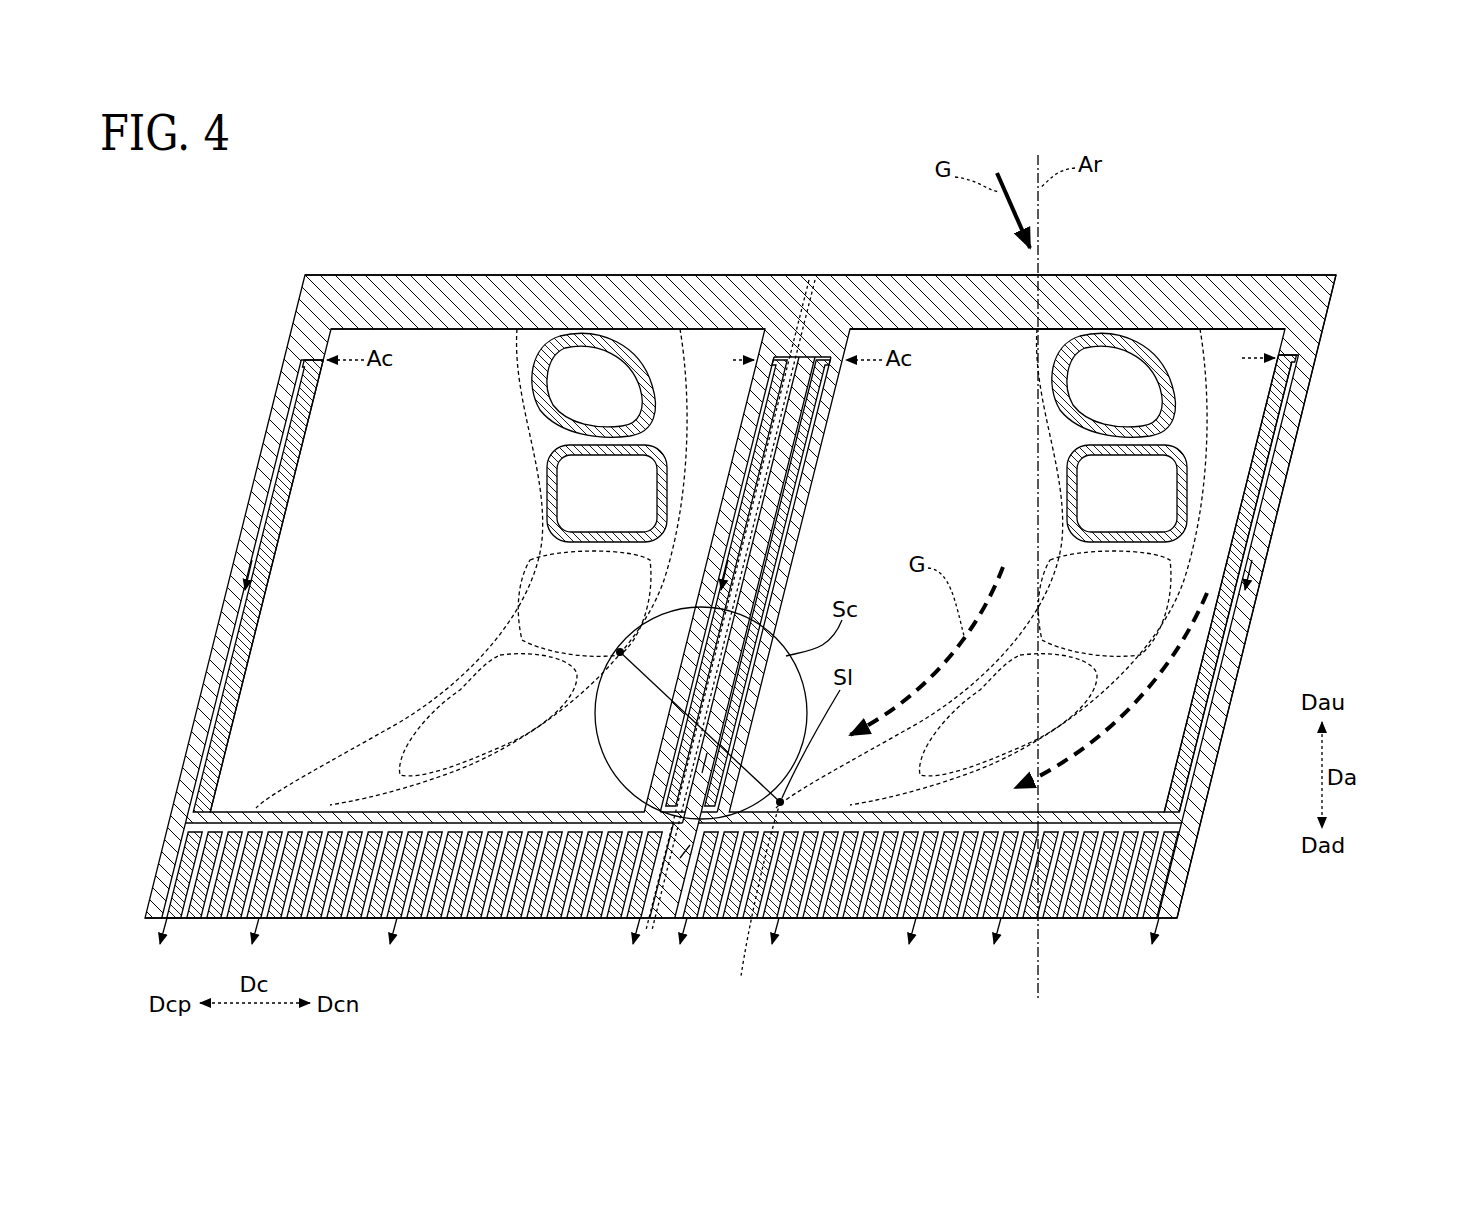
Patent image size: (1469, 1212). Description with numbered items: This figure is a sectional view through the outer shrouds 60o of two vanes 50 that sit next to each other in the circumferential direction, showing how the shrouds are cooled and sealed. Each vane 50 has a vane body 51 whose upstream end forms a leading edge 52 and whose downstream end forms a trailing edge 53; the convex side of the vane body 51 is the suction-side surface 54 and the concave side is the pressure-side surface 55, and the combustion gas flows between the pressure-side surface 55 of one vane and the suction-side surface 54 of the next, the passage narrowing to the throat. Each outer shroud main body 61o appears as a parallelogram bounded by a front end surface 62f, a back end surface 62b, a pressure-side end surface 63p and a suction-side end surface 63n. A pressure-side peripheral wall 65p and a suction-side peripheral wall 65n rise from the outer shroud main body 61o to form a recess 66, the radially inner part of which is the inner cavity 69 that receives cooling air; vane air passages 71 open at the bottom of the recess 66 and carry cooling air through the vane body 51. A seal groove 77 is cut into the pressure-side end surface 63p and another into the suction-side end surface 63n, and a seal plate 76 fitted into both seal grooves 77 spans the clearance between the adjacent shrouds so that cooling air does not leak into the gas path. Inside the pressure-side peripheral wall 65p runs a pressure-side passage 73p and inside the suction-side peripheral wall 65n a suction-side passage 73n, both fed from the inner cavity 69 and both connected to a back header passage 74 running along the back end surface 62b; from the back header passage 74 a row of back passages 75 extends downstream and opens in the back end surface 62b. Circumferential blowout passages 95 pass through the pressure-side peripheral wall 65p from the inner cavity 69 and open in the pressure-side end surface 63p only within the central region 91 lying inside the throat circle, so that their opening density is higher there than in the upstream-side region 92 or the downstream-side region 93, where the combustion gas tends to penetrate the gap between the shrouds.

The vane 50 is at (378, 263).
The vane body 51 is at (513, 530).
The leading edge 52 is at (1072, 330).
The trailing edge 53 is at (754, 902).
The suction-side surface 54 is at (790, 503).
The pressure-side surface 55 is at (1050, 486).
The outer shroud 60o is at (458, 266).
The outer shroud main body 61o is at (1244, 266).
The front end surface 62f is at (1120, 275).
The back end surface 62b is at (870, 920).
The pressure-side end surface 63p is at (770, 453).
The suction-side end surface 63n is at (1283, 488).
The pressure-side peripheral wall 65p is at (793, 427).
The suction-side peripheral wall 65n is at (1272, 440).
The recess 66 is at (465, 360).
The inner cavity 69 is at (952, 400).
The vane air passage 71 is at (512, 575).
The pressure-side passage 73p is at (817, 383).
The suction-side passage 73n is at (1266, 500).
The back header passage 74 is at (947, 830).
The back passage 75 is at (814, 920).
The seal plate 76 is at (657, 920).
The seal groove 77 is at (783, 275).
The central region 91 is at (707, 753).
The upstream-side region 92 is at (725, 276).
The downstream-side region 93 is at (680, 858).
The circumferential blowout passage 95 is at (713, 687).